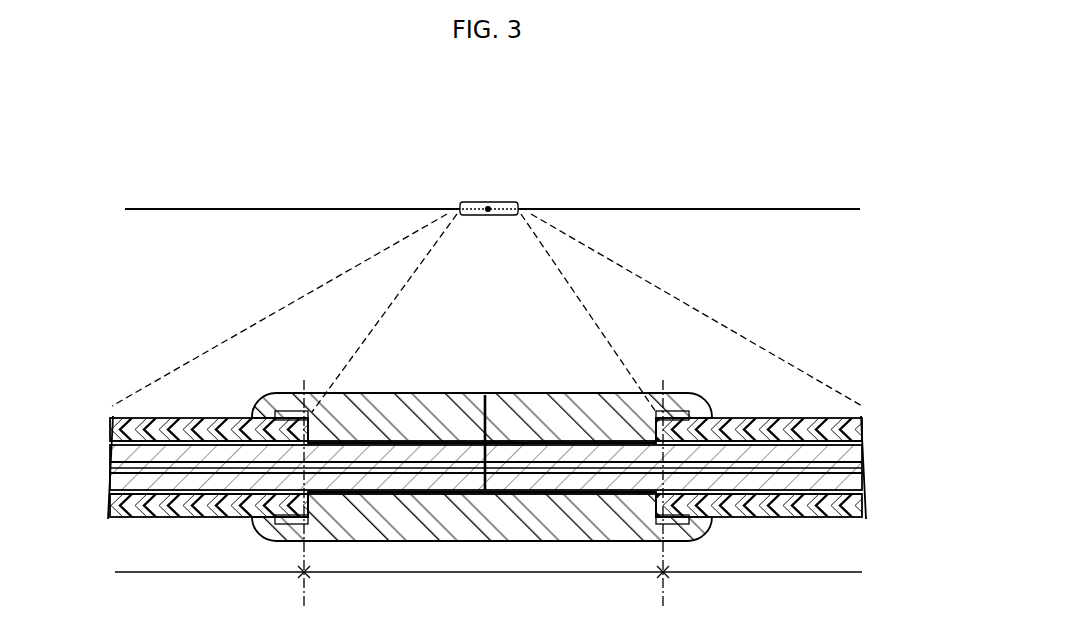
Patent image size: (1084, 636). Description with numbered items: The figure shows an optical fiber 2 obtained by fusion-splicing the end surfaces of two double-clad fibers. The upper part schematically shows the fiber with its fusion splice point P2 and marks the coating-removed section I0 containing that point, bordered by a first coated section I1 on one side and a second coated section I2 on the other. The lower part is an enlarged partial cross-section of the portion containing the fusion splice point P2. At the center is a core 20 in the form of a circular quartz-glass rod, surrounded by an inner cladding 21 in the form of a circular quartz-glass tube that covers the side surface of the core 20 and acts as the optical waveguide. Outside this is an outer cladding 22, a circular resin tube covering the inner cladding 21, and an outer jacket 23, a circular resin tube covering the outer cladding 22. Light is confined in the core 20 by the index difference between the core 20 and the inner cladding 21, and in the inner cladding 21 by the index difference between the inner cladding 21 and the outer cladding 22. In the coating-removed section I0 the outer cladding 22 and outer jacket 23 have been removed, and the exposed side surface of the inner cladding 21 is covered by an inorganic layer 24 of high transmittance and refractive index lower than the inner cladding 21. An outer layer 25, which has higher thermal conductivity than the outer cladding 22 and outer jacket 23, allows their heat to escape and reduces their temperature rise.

The optical fiber 2 is at (810, 131).
The core 20 is at (571, 463).
The inner cladding 21 is at (528, 446).
The outer cladding 22 is at (114, 449).
The outer jacket 23 is at (114, 431).
The inorganic layer 24 is at (386, 440).
The outer layer 25 is at (440, 393).
The fusion splice point P2 is at (485, 395).
The first coated section I1 is at (385, 205).
The coating-removed section I0 is at (478, 204).
The second coated section I2 is at (583, 205).